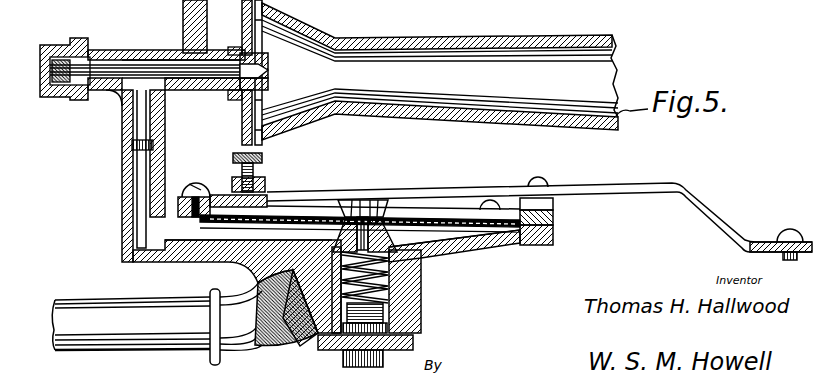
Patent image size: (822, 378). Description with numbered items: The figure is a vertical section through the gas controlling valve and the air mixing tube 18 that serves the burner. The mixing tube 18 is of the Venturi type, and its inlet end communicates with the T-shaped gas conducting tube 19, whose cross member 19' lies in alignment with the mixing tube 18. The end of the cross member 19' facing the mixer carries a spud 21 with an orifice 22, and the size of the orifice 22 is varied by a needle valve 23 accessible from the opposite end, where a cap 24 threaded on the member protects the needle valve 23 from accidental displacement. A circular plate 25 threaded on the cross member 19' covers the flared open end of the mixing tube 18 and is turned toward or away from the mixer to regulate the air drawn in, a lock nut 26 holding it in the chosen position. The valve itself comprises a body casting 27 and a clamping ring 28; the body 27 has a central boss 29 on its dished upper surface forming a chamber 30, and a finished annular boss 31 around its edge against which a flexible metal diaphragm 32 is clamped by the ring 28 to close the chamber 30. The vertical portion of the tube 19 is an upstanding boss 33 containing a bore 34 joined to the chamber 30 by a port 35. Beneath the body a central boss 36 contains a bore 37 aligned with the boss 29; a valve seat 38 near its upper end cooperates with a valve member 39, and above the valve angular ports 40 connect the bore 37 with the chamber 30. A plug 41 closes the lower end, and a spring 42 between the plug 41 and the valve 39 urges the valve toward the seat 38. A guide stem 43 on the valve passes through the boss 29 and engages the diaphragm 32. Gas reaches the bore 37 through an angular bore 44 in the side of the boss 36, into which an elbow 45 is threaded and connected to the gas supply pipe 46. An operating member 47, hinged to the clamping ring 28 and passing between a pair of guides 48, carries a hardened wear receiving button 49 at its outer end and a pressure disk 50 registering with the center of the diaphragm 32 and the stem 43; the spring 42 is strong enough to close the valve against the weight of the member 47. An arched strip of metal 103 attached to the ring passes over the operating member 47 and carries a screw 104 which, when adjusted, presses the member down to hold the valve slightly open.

The air mixing tube 18 is at (412, 113).
The gas conducting tube 19 is at (166, 54).
The cross member 19' is at (154, 43).
The spud 21 is at (268, 84).
The orifice 22 is at (268, 69).
The needle valve 23 is at (200, 84).
The cap 24 is at (65, 96).
The circular plate 25 is at (242, 133).
The lock nut 26 is at (234, 49).
The body casting 27 is at (503, 250).
The clamping ring 28 is at (553, 215).
The boss 29 is at (390, 236).
The chamber 30 is at (360, 235).
The annular boss 31 is at (553, 236).
The flexible metal diaphragm 32 is at (445, 220).
The upstanding boss 33 is at (122, 169).
The bore 34 is at (133, 198).
The port 35 is at (172, 262).
The central boss 36 is at (421, 307).
The bore 37 is at (390, 273).
The valve seat 38 is at (345, 233).
The valve member 39 is at (396, 256).
The angular ports 40 is at (342, 237).
The plug 41 is at (413, 343).
The spring 42 is at (397, 291).
The guide stem 43 is at (392, 204).
The angular bore 44 is at (305, 336).
The elbow 45 is at (243, 357).
The gas supply pipe 46 is at (150, 356).
The operating member 47 is at (487, 188).
The guides 48 is at (548, 184).
The wear receiving button 49 is at (789, 240).
The pressure disk 50 is at (358, 200).
The strip of metal 103 is at (265, 180).
The screw 104 is at (262, 158).